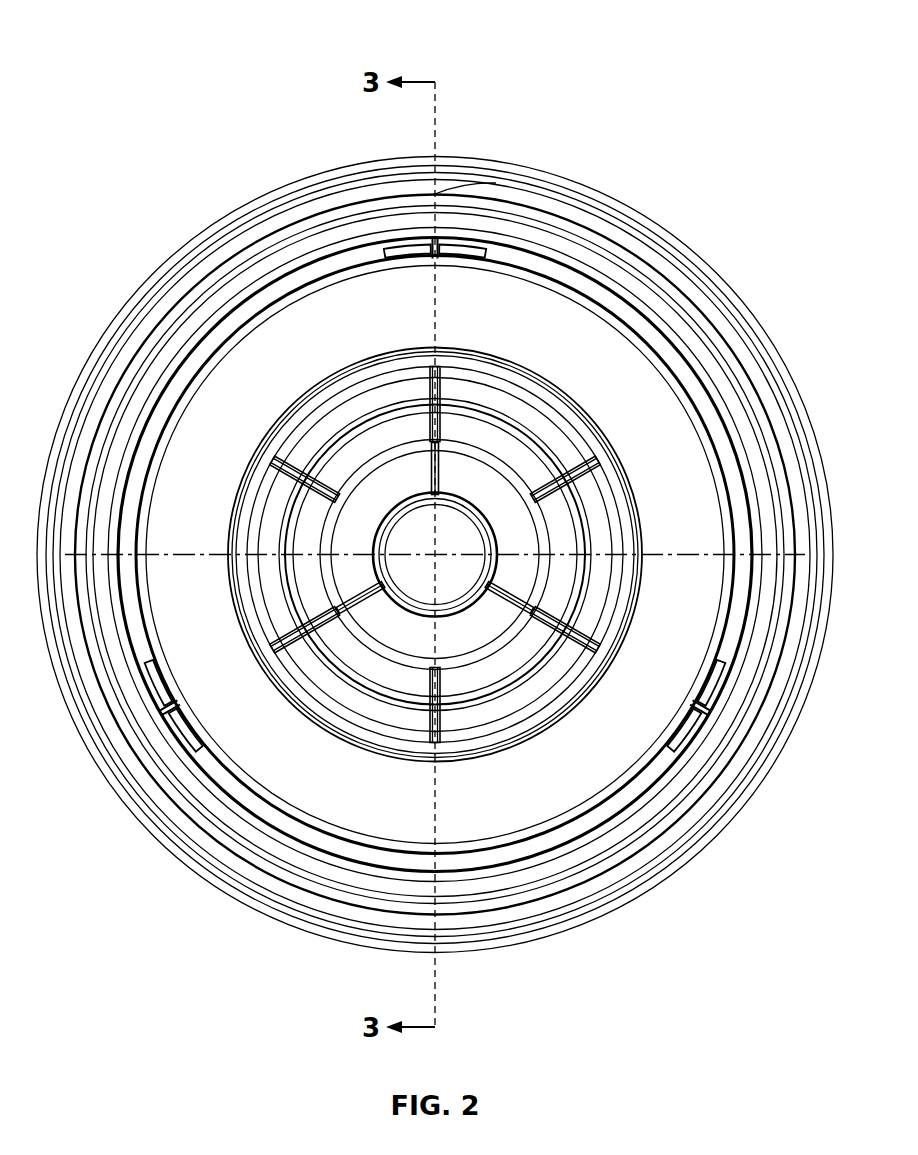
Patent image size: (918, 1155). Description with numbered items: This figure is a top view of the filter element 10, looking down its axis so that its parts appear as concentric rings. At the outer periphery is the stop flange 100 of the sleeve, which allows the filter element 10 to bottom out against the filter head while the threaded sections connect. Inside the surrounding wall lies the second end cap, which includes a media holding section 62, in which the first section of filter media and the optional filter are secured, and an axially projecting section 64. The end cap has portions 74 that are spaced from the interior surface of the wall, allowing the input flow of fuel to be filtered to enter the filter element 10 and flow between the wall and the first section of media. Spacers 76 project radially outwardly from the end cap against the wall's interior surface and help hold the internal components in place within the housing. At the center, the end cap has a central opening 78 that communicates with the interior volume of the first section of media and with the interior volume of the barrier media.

The filter element 10 is at (782, 38).
The stop flange 100 is at (248, 204).
The media holding section 62 is at (695, 478).
The axially projecting section 64 is at (613, 630).
The portions 74 is at (592, 830).
The spacers 76 is at (698, 738).
The central opening 78 is at (393, 525).